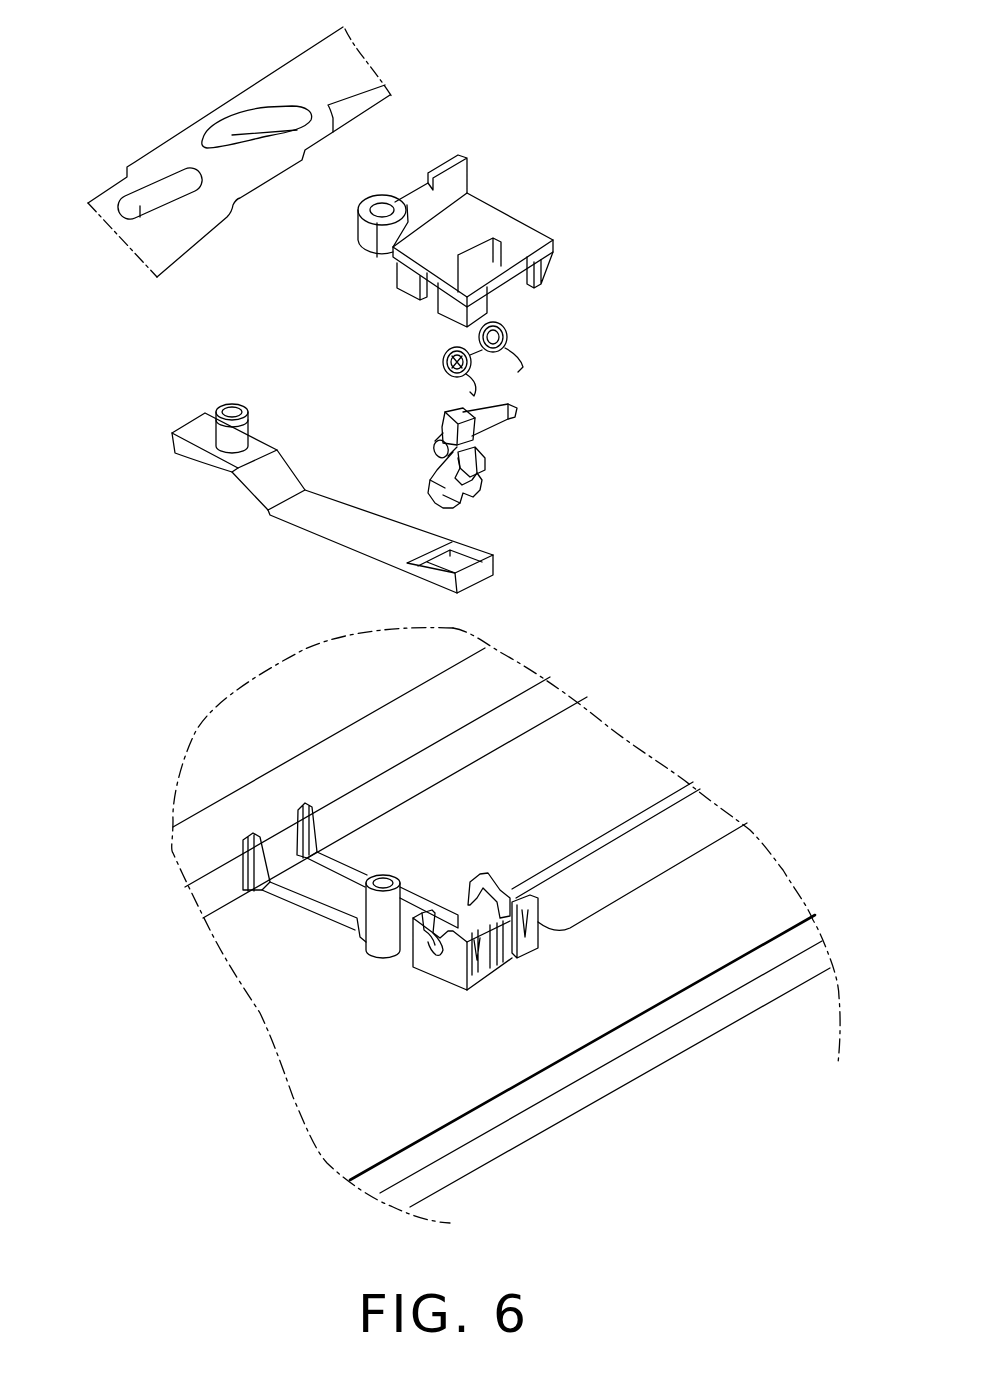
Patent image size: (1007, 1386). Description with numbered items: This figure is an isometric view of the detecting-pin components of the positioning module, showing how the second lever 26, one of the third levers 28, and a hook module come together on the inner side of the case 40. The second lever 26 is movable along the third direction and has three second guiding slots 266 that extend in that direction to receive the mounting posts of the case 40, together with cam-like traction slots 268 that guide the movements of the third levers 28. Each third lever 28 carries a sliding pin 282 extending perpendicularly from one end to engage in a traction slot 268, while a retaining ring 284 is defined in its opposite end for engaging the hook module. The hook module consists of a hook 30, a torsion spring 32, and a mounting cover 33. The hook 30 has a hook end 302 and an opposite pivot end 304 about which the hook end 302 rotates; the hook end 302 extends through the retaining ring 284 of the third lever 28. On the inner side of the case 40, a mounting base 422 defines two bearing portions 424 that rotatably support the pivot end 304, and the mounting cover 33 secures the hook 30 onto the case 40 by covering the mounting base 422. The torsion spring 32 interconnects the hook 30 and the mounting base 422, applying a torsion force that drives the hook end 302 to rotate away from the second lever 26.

The second lever 26 is at (317, 80).
The second guiding slots 266 is at (157, 193).
The traction slots 268 is at (233, 128).
The mounting cover 33 is at (500, 185).
The torsion spring 32 is at (507, 333).
The hook 30 is at (508, 435).
The pivot end 304 is at (500, 420).
The hook end 302 is at (470, 498).
The third lever 28 is at (160, 417).
The sliding pin 282 is at (233, 410).
The retaining ring 284 is at (450, 566).
The case 40 is at (748, 877).
The bearing portions 424 is at (440, 945).
The mounting base 422 is at (478, 975).